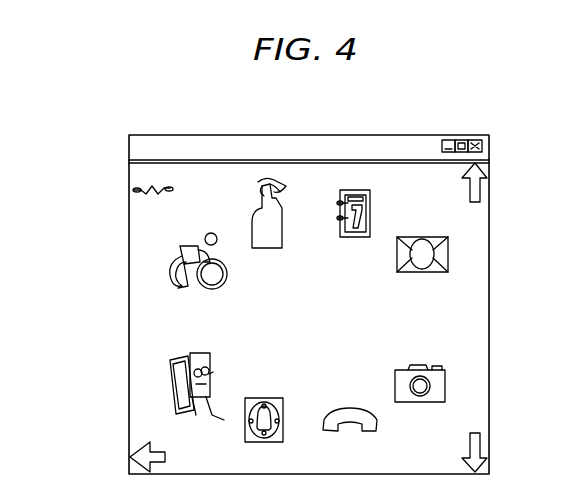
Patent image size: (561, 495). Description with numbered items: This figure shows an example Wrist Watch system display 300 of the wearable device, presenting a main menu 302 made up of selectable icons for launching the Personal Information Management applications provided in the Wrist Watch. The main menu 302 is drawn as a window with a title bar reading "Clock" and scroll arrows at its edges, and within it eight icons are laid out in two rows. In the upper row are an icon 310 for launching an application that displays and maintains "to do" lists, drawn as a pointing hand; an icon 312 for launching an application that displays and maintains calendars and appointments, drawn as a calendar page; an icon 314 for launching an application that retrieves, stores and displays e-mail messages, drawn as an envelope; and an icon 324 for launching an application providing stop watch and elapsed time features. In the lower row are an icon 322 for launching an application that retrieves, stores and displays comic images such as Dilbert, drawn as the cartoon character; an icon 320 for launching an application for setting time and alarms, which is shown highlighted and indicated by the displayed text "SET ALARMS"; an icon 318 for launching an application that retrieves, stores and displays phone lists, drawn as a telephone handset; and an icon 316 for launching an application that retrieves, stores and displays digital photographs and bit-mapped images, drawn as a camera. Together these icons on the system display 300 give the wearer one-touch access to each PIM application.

The system display 300 is at (92, 125).
The main menu 302 is at (418, 134).
The to-do list icon 310 is at (283, 232).
The calendar icon 312 is at (369, 193).
The e-mail icon 314 is at (436, 273).
The photograph icon 316 is at (418, 403).
The phone list icon 318 is at (345, 408).
The time and alarms icon 320 is at (266, 397).
The comic images icon 322 is at (194, 352).
The stop watch icon 324 is at (186, 246).